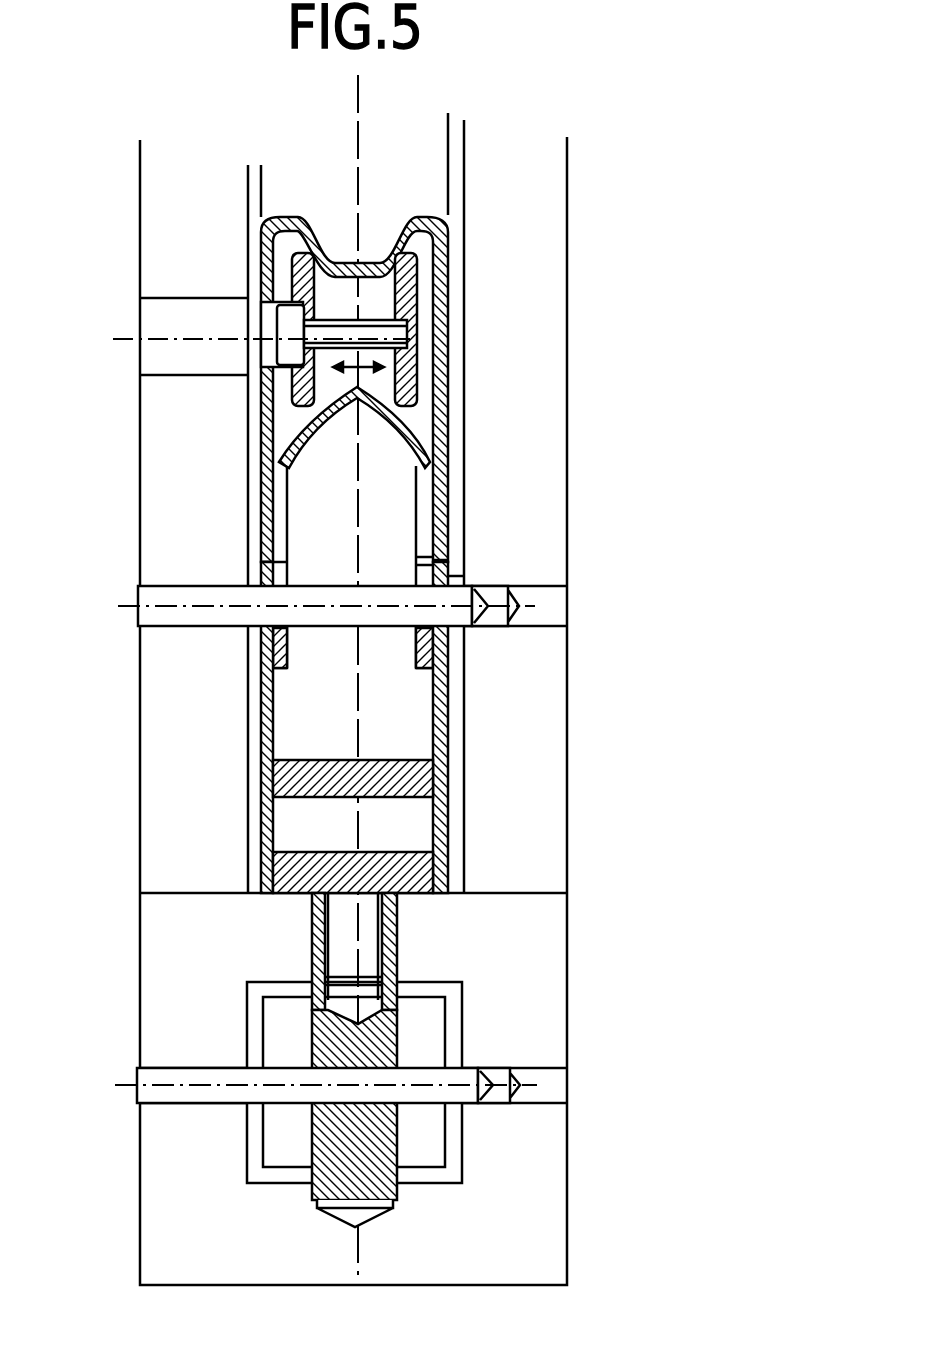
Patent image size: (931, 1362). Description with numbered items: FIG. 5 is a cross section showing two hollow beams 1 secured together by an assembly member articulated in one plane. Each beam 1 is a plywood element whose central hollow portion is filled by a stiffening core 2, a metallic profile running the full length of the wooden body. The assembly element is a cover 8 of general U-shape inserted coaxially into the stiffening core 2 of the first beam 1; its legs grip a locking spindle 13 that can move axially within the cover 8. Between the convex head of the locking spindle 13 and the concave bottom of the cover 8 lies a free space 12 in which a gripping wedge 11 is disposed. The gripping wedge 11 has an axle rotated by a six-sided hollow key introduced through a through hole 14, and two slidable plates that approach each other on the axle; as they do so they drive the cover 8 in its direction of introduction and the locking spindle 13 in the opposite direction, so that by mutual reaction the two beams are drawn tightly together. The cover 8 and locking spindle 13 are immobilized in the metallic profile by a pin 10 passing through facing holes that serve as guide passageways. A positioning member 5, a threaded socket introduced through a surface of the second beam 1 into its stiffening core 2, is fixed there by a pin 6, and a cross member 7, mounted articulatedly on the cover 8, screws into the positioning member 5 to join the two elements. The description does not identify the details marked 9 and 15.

The hollow beam 1 is at (140, 700).
The stiffening core 2 is at (455, 195).
The positioning member 5 is at (382, 1055).
The pin 6 is at (158, 1103).
The cross member 7 is at (362, 948).
The cover 8 is at (448, 728).
The plug chamber 9 is at (410, 828).
The pin 10 is at (162, 605).
The gripping wedge 11 is at (405, 333).
The free space 12 is at (418, 373).
The locking spindle 13 is at (448, 517).
The through hole 14 is at (152, 324).
The joint 15 is at (455, 575).